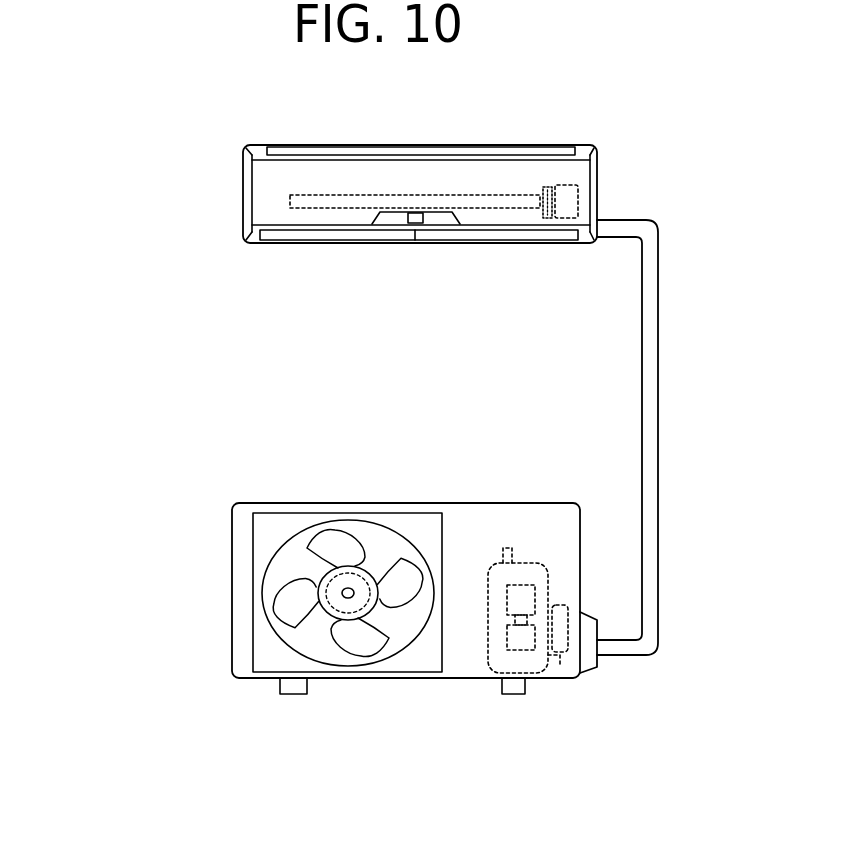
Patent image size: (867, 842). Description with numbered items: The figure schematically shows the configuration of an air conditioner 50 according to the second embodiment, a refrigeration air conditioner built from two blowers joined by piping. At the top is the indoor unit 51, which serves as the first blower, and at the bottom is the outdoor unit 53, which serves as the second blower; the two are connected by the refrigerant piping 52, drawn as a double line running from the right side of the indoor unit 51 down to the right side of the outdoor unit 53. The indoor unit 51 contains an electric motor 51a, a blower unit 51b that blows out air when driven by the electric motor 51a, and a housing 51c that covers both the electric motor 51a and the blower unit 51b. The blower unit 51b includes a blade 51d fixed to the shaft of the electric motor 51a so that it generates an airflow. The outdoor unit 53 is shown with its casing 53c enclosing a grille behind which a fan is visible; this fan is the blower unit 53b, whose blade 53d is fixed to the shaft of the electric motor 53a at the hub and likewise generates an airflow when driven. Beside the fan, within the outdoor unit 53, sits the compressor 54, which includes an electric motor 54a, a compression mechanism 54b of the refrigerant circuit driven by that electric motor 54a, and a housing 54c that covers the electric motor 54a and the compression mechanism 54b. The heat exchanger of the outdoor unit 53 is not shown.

The air conditioner 50 is at (129, 140).
The indoor unit 51 is at (301, 130).
The electric motor 51a is at (580, 202).
The blower unit 51b is at (290, 198).
The housing 51c is at (410, 145).
The blade 51d is at (550, 220).
The refrigerant piping 52 is at (660, 378).
The outdoor unit 53 is at (303, 467).
The electric motor 53a is at (348, 620).
The blower unit 53b is at (253, 557).
The outdoor unit casing 53c is at (405, 503).
The blade 53d is at (282, 601).
The compressor 54 is at (470, 576).
The electric motor 54a is at (518, 598).
The compression mechanism 54b is at (520, 635).
The housing 54c is at (492, 660).